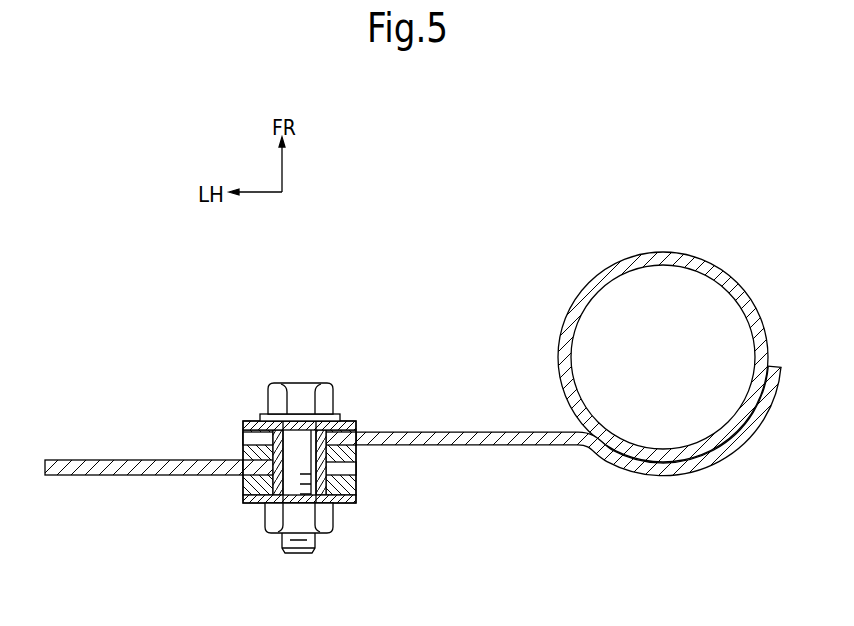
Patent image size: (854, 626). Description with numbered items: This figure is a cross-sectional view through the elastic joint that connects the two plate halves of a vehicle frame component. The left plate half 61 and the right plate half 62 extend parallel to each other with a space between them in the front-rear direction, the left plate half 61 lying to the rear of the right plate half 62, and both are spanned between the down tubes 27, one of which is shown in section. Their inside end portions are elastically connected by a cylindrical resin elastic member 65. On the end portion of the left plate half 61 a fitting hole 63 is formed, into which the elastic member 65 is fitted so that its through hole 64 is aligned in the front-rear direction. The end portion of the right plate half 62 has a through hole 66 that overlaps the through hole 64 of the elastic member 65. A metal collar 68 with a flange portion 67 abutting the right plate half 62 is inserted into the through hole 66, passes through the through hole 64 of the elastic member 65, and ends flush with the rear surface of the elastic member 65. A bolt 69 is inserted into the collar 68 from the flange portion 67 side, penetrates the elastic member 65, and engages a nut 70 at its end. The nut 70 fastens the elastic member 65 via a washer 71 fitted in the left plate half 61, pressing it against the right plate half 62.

The down tube 27 is at (708, 268).
The left plate half 61 is at (100, 460).
The right plate half 62 is at (472, 432).
The fitting hole 63 is at (262, 486).
The through hole 64 is at (280, 460).
The elastic member 65 is at (243, 457).
The through hole 66 is at (312, 428).
The flange portion 67 is at (347, 421).
The collar 68 is at (276, 414).
The bolt 69 is at (297, 396).
The nut 70 is at (328, 523).
The washer 71 is at (357, 498).